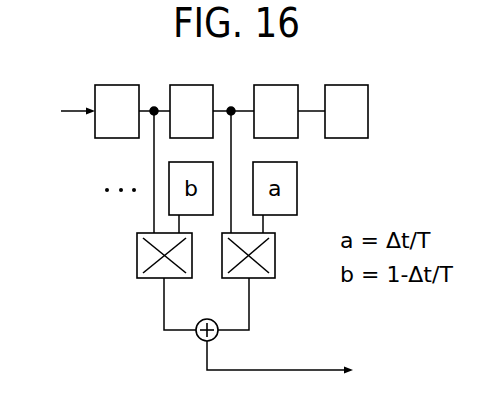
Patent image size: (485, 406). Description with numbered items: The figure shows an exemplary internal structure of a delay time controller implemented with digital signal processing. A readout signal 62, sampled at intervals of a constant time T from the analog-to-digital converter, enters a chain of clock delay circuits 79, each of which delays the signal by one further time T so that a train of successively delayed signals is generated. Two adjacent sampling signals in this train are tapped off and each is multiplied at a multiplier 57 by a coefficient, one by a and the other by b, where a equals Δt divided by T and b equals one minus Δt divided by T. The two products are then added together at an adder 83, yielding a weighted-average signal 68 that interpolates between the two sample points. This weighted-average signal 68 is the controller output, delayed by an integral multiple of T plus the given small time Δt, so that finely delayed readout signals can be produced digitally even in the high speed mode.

The readout signal 62 is at (63, 112).
The 1-T clock delay circuit 79 is at (231, 111).
The multiplier 57 is at (188, 256).
The adder 83 is at (192, 343).
The weighted-average signal 68 is at (297, 362).